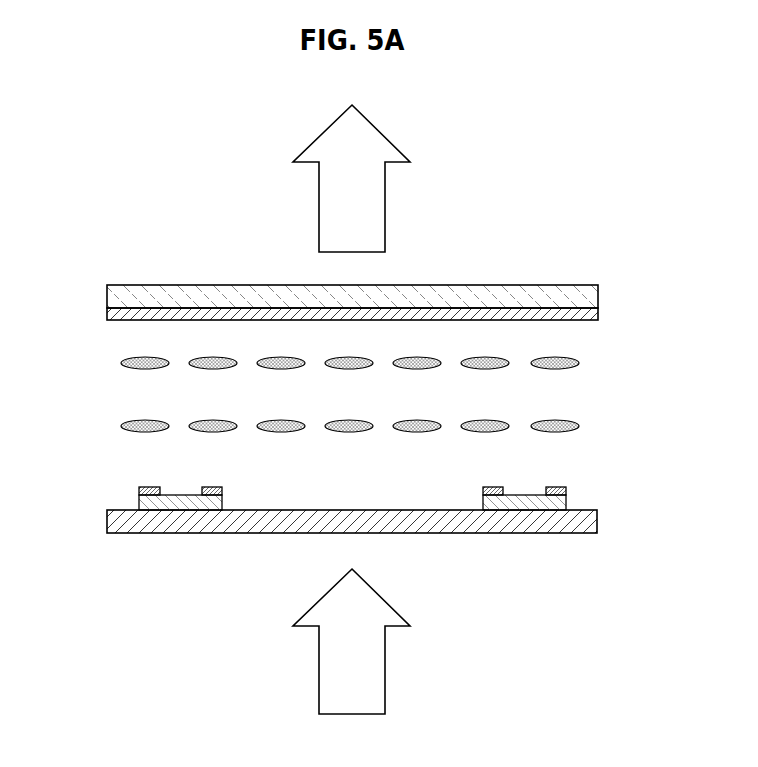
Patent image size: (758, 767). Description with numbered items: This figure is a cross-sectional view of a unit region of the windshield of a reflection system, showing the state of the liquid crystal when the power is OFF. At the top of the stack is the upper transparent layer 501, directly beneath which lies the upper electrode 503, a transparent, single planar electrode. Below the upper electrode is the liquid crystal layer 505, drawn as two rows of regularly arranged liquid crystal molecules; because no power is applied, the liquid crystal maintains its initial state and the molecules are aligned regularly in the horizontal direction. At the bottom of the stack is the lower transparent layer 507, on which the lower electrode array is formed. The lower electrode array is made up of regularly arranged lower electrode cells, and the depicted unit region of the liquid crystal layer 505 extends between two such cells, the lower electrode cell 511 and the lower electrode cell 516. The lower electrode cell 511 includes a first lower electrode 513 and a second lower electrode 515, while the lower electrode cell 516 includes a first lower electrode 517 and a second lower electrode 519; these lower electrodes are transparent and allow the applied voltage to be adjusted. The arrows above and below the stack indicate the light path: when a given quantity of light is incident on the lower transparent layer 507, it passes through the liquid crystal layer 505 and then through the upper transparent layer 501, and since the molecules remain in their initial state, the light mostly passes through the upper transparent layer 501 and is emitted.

The upper transparent layer 501 is at (117, 297).
The upper electrode 503 is at (117, 313).
The liquid crystal layer 505 is at (113, 393).
The lower transparent layer 507 is at (590, 521).
The lower electrode cell 511 is at (182, 502).
The first lower electrode 513 is at (150, 487).
The second lower electrode 515 is at (213, 487).
The lower electrode cell 516 is at (532, 502).
The first lower electrode 517 is at (493, 487).
The second lower electrode 519 is at (557, 487).